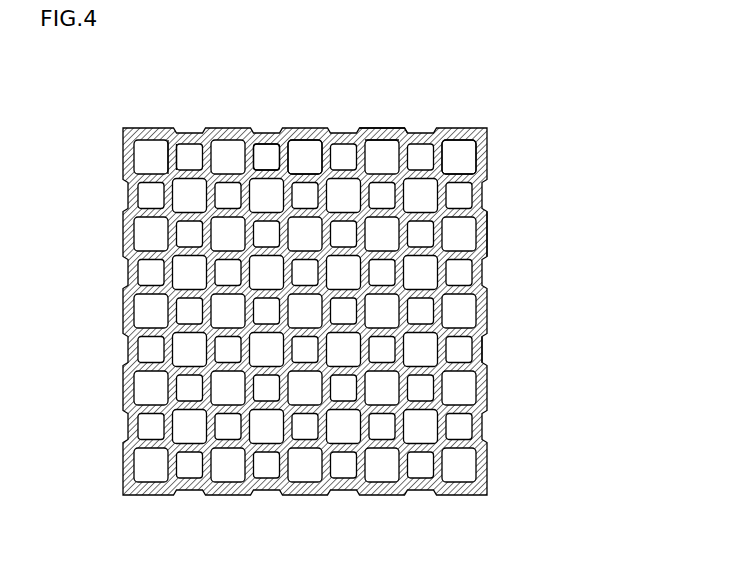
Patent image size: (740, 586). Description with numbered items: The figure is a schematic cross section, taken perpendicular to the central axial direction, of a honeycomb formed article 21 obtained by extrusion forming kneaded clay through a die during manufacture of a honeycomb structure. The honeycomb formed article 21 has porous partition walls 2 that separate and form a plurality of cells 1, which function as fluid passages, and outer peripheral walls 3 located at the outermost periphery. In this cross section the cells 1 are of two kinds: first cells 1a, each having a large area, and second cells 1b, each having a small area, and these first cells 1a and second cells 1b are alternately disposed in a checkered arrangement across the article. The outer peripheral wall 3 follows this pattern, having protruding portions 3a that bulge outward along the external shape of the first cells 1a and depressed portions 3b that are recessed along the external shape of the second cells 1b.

The cell 1 is at (458, 156).
The first cell 1a is at (305, 152).
The second cell 1b is at (265, 155).
The partition wall 2 is at (196, 157).
The outer peripheral wall 3 is at (373, 128).
The protruding portion 3a is at (485, 232).
The depressed portion 3b is at (485, 352).
The honeycomb formed article 21 is at (593, 77).